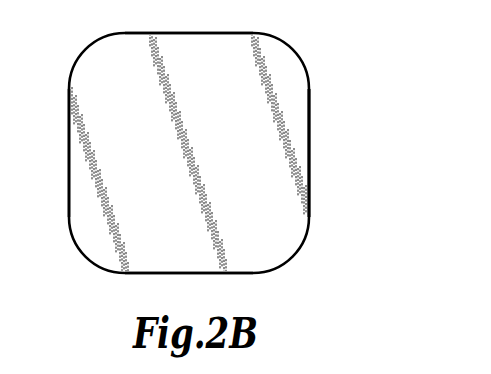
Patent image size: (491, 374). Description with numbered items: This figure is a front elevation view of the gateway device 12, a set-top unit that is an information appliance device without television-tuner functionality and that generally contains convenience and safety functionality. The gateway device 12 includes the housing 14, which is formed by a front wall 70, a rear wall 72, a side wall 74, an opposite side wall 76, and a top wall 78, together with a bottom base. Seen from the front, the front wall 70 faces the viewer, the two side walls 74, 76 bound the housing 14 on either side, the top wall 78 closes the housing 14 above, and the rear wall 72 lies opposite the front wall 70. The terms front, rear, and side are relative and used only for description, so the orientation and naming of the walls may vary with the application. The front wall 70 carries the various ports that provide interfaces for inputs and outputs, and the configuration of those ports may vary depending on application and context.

The gateway device 12 is at (314, 55).
The housing 14 is at (313, 190).
The front wall 70 is at (192, 274).
The rear wall 72 is at (193, 33).
The side wall 74 is at (310, 152).
The side wall 76 is at (70, 183).
The top wall 78 is at (88, 99).